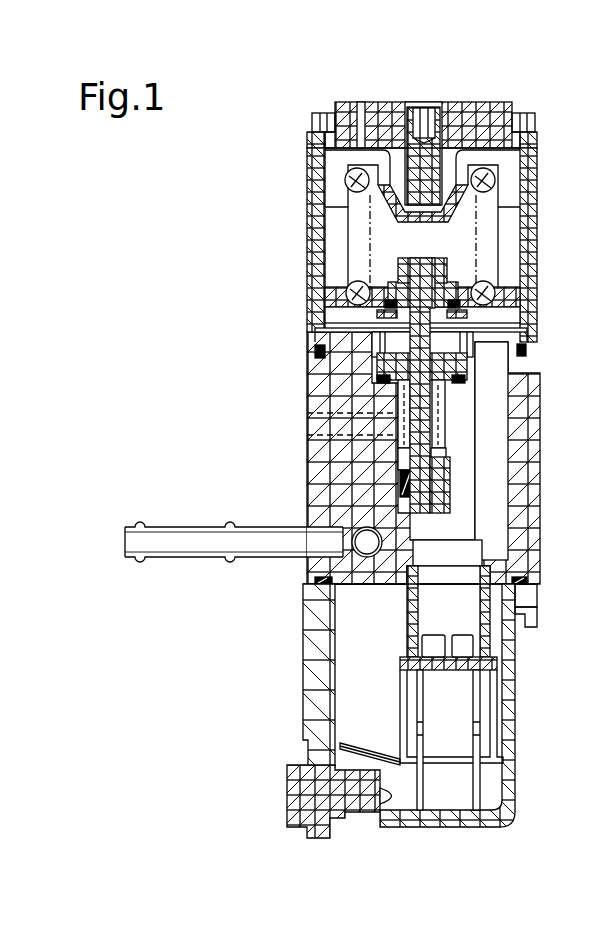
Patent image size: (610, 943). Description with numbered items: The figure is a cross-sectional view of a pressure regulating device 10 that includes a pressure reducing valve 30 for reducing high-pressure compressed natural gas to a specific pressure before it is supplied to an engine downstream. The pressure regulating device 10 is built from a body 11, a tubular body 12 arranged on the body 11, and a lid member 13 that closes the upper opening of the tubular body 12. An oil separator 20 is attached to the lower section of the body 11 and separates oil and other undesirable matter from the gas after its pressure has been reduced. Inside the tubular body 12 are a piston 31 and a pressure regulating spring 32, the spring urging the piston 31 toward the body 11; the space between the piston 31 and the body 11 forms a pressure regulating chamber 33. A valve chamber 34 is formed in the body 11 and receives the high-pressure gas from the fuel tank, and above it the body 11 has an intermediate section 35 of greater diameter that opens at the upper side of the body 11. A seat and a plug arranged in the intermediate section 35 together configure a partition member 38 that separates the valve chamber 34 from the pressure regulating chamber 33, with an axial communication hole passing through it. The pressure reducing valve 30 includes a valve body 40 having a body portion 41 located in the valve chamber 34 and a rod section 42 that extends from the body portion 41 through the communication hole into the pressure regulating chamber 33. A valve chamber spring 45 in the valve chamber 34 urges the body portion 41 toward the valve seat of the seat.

The pressure regulating device 10 is at (283, 99).
The body 11 is at (316, 486).
The tubular body 12 is at (312, 209).
The lid member 13 is at (472, 110).
The oil separator 20 is at (293, 622).
The pressure reducing valve 30 is at (549, 264).
The piston 31 is at (328, 281).
The pressure regulating spring 32 is at (348, 183).
The pressure regulating chamber 33 is at (358, 323).
The valve chamber 34 is at (433, 399).
The intermediate section 35 is at (522, 334).
The partition member 38 is at (372, 363).
The valve body 40 is at (398, 397).
The body portion 41 is at (443, 390).
The rod section 42 is at (372, 330).
The valve chamber spring 45 is at (443, 430).